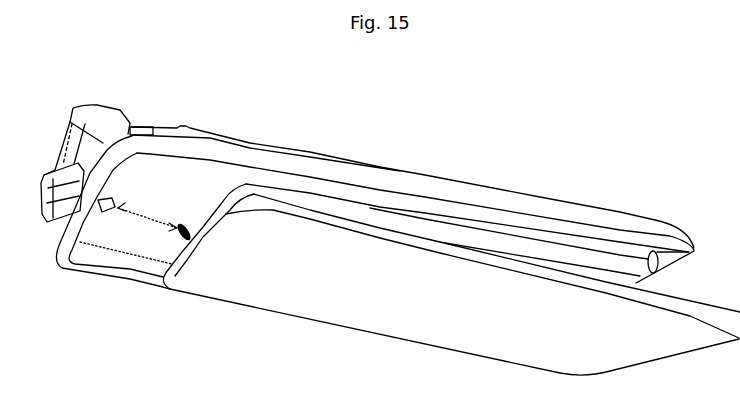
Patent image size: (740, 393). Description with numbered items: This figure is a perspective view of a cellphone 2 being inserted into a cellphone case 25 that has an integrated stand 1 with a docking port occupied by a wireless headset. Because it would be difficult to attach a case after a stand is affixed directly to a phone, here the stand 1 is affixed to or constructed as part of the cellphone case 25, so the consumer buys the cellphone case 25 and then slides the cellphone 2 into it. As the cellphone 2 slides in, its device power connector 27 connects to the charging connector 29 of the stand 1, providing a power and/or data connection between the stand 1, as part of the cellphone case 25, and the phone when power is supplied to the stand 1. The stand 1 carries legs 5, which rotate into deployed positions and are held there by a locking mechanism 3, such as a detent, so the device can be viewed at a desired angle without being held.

The stand 1 is at (98, 104).
The cellphone 2 is at (280, 266).
The locking mechanism 3 is at (152, 127).
The legs 5 is at (247, 141).
The cellphone case 25 is at (637, 267).
The device power connector 27 is at (180, 222).
The charging connector 29 is at (112, 212).